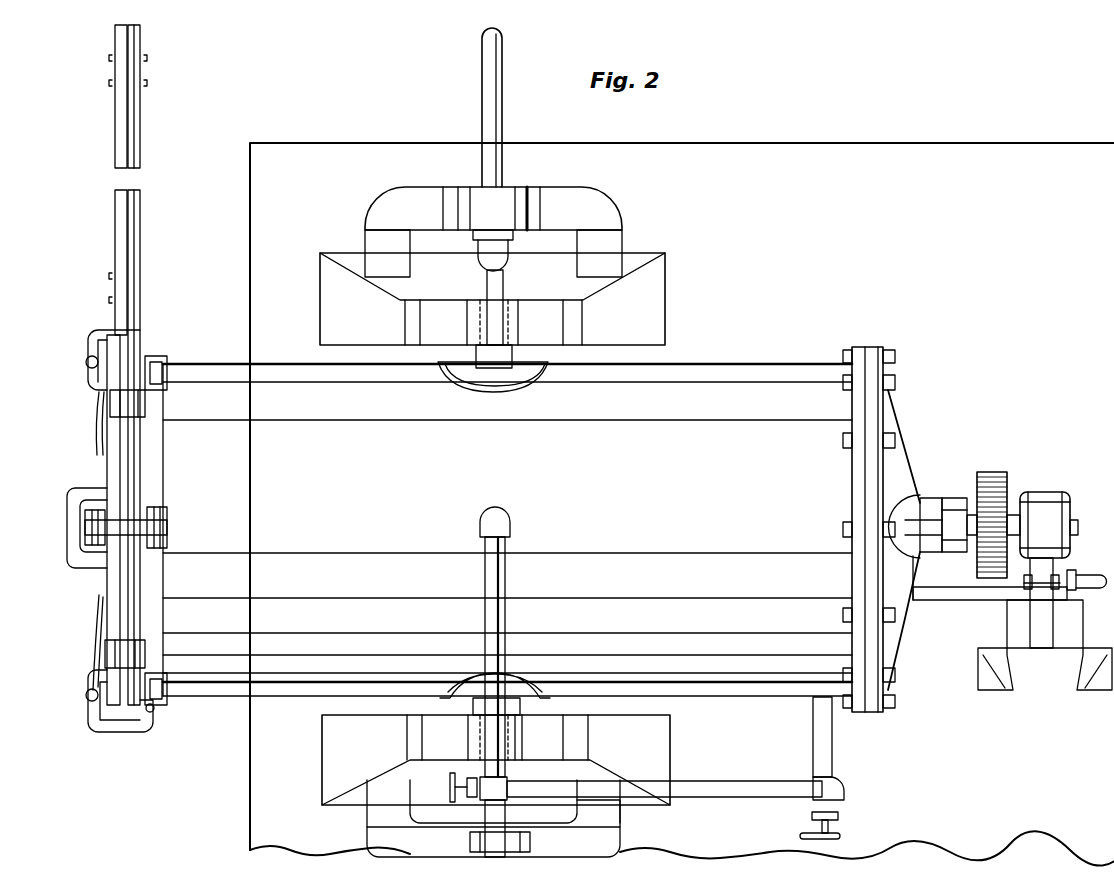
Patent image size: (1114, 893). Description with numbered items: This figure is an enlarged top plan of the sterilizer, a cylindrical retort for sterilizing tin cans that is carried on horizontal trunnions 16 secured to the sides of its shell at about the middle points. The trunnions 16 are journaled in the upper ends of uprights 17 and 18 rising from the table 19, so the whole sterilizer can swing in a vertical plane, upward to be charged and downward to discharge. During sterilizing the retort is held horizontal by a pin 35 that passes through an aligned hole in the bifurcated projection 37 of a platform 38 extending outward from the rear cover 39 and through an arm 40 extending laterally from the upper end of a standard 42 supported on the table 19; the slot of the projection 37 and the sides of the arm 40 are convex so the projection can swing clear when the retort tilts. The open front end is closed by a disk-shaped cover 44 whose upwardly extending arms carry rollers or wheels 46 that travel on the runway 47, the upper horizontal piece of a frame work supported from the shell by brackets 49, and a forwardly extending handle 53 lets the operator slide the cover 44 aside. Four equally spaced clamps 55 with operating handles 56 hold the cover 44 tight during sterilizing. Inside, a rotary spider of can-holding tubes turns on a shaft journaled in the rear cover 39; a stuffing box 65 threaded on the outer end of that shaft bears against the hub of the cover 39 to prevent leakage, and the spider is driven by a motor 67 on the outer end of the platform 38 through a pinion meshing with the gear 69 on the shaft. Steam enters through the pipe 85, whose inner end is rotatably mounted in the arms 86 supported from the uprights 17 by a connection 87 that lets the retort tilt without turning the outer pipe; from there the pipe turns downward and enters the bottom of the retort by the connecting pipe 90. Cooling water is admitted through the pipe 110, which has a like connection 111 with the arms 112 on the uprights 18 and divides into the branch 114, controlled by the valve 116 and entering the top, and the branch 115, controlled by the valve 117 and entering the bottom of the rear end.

The trunnions 16 is at (495, 347).
The uprights 17 is at (652, 300).
The uprights 18 is at (654, 732).
The table 19 is at (682, 496).
The pin 35 is at (1090, 578).
The bifurcated projection 37 is at (1028, 587).
The platform 38 is at (965, 500).
The rear cover 39 is at (892, 415).
The arm 40 is at (1045, 660).
The standard 42 is at (1000, 690).
The cover 44 is at (106, 463).
The rollers or wheels 46 is at (110, 403).
The runway 47 is at (138, 466).
The brackets 49 is at (147, 335).
The handle 53 is at (70, 530).
The clamps 55 is at (96, 335).
The operating handles 56 is at (97, 440).
The stuffing box 65 is at (927, 502).
The motor 67 is at (1045, 500).
The gear 69 is at (995, 474).
The steam pipe 85 is at (492, 102).
The arms 86 is at (574, 200).
The connection 87 is at (487, 200).
The connecting pipe 90 is at (486, 285).
The cold water pipe 110 is at (507, 815).
The connection 111 is at (620, 830).
The arms 112 is at (375, 841).
The branch 114 is at (502, 542).
The branch 115 is at (749, 782).
The valve 116 is at (450, 789).
The valve 117 is at (811, 818).